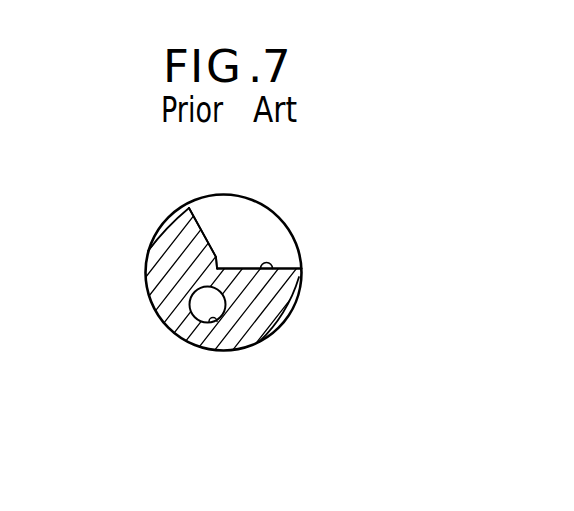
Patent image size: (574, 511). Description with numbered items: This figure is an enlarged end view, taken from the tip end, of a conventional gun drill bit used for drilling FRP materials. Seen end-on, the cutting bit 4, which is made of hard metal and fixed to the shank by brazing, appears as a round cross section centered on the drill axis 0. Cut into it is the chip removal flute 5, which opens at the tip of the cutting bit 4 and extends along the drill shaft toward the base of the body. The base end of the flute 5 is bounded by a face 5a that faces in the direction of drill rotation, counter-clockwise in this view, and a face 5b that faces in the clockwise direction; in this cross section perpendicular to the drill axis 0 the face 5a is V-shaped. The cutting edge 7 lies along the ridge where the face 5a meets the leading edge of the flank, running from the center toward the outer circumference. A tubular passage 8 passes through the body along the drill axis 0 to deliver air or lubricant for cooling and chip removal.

The cutting bit 4 is at (152, 278).
The chip removal flute 5 is at (278, 233).
The face facing the direction of drill rotation 5a is at (293, 262).
The face facing the clockwise direction 5b is at (208, 227).
The cutting edge 7 is at (294, 291).
The tubular passage 8 is at (214, 321).
The drill axis 0 is at (219, 267).